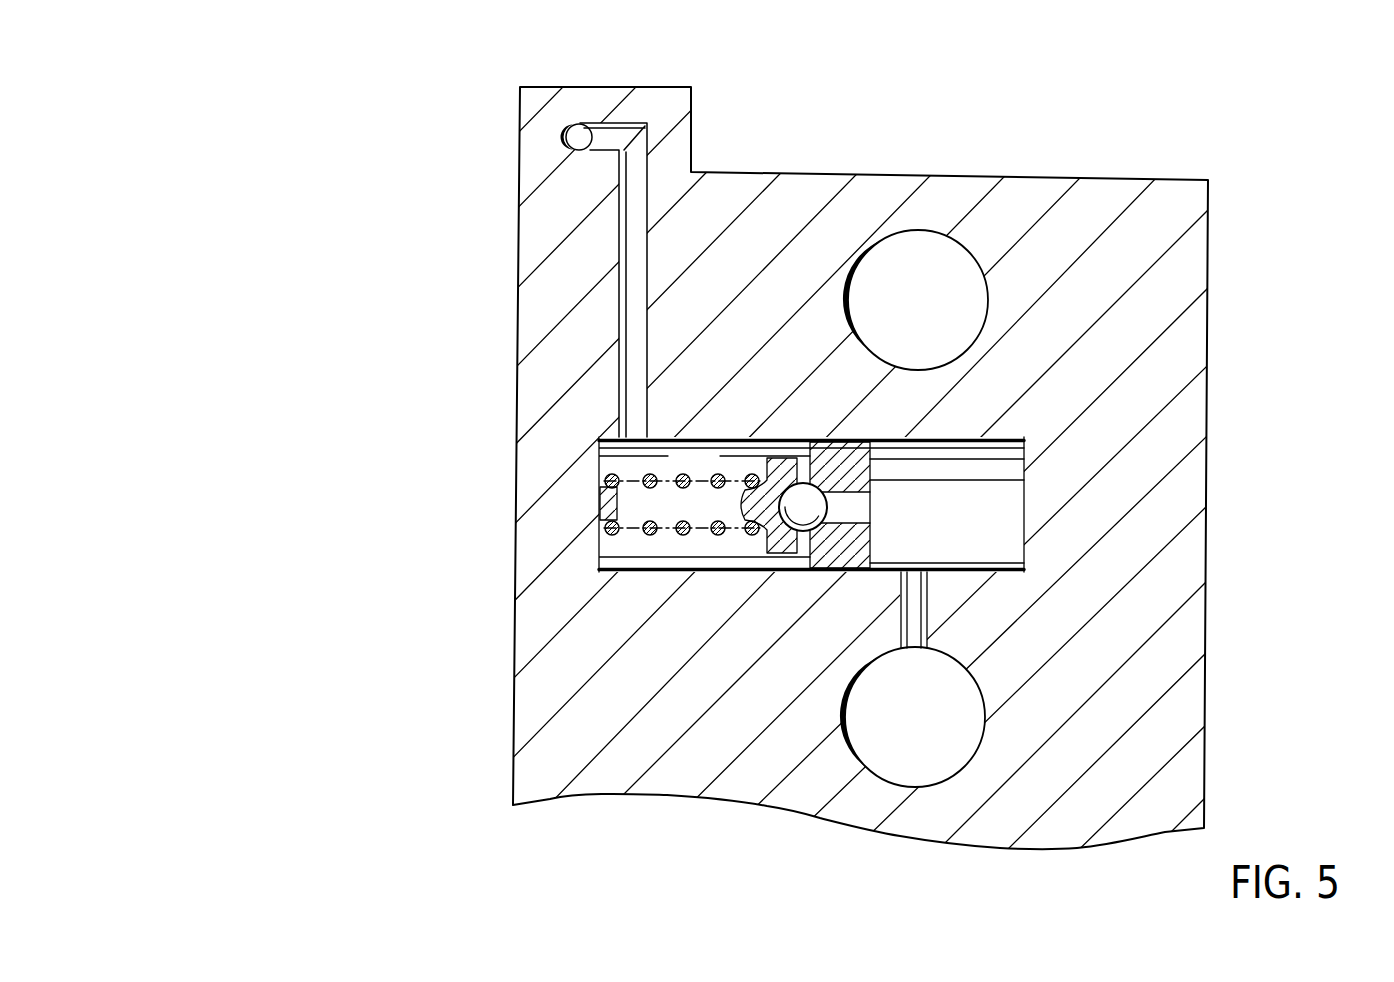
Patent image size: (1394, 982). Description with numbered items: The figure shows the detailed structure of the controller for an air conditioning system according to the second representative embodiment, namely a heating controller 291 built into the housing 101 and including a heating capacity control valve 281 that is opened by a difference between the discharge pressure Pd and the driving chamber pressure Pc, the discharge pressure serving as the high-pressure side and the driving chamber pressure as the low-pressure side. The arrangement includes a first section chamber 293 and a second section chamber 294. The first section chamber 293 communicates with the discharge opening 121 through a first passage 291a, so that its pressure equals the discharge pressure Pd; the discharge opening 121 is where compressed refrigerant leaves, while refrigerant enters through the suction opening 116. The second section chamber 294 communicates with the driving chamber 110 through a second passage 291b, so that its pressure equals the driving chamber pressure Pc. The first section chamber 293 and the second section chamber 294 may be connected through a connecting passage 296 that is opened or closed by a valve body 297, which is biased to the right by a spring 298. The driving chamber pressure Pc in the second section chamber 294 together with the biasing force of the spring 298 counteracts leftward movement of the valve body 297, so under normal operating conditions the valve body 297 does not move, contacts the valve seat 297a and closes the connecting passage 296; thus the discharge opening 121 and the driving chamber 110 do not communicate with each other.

The rear housing 101 is at (1231, 160).
The driving chamber 110 is at (579, 137).
The suction opening 116 is at (913, 257).
The discharge opening 121 is at (930, 762).
The heating capacity control valve 281 is at (1052, 510).
The heating controller 291 is at (1037, 424).
The first passage 291a is at (908, 619).
The second passage 291b is at (628, 268).
The first section chamber 293 is at (982, 466).
The second section chamber 294 is at (599, 567).
The connecting passage 296 is at (892, 511).
The valve body 297 is at (803, 515).
The valve seat 297a is at (842, 460).
The spring 298 is at (648, 473).